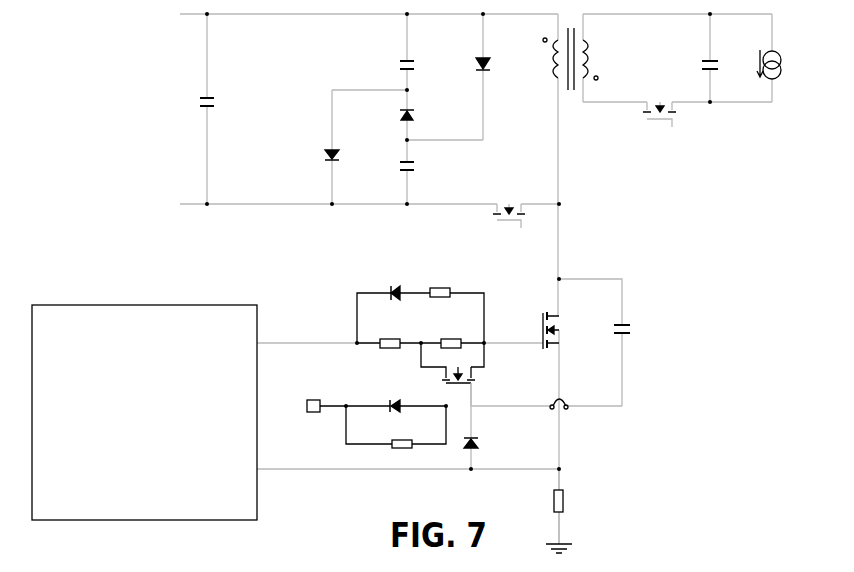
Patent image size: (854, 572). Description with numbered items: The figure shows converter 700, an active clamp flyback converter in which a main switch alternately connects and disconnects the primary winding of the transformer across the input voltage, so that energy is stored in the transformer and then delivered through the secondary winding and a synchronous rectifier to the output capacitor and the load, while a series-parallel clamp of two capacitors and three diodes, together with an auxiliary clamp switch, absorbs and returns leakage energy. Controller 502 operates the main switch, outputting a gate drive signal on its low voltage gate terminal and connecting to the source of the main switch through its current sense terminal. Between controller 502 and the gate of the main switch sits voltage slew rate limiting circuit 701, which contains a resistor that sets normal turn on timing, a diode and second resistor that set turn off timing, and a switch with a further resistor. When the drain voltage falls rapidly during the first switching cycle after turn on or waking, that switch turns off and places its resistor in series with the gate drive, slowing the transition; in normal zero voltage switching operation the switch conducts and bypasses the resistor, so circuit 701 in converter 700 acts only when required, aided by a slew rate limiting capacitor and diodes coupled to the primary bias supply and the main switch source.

The converter 700 is at (126, 92).
The controller 502 is at (128, 305).
The voltage slew rate limiting circuit 701 is at (335, 283).